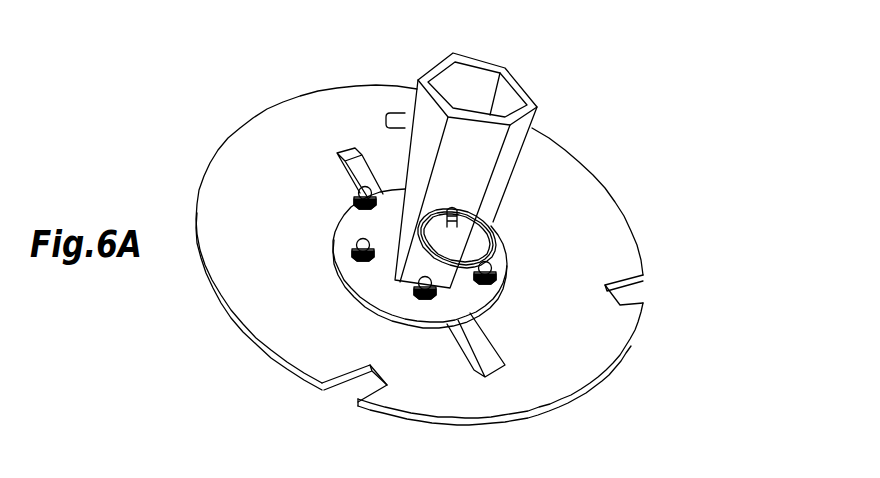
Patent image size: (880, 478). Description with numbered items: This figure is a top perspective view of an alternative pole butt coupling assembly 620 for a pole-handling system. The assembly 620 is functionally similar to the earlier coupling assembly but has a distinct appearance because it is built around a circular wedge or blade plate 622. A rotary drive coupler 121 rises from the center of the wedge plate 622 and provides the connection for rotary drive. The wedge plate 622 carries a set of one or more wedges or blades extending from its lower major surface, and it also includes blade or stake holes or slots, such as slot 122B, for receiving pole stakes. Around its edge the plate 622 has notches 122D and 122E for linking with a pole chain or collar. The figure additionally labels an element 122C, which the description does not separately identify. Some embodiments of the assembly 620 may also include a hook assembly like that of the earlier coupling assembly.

The pole butt coupling assembly 620 is at (623, 64).
The rotary drive coupler 121 is at (502, 85).
The circular wedge or blade plate 622 is at (600, 186).
The blade or stake hole or slot 122B is at (347, 164).
The second arm 122C is at (477, 353).
The notch 122D is at (606, 288).
The notch 122E is at (378, 311).